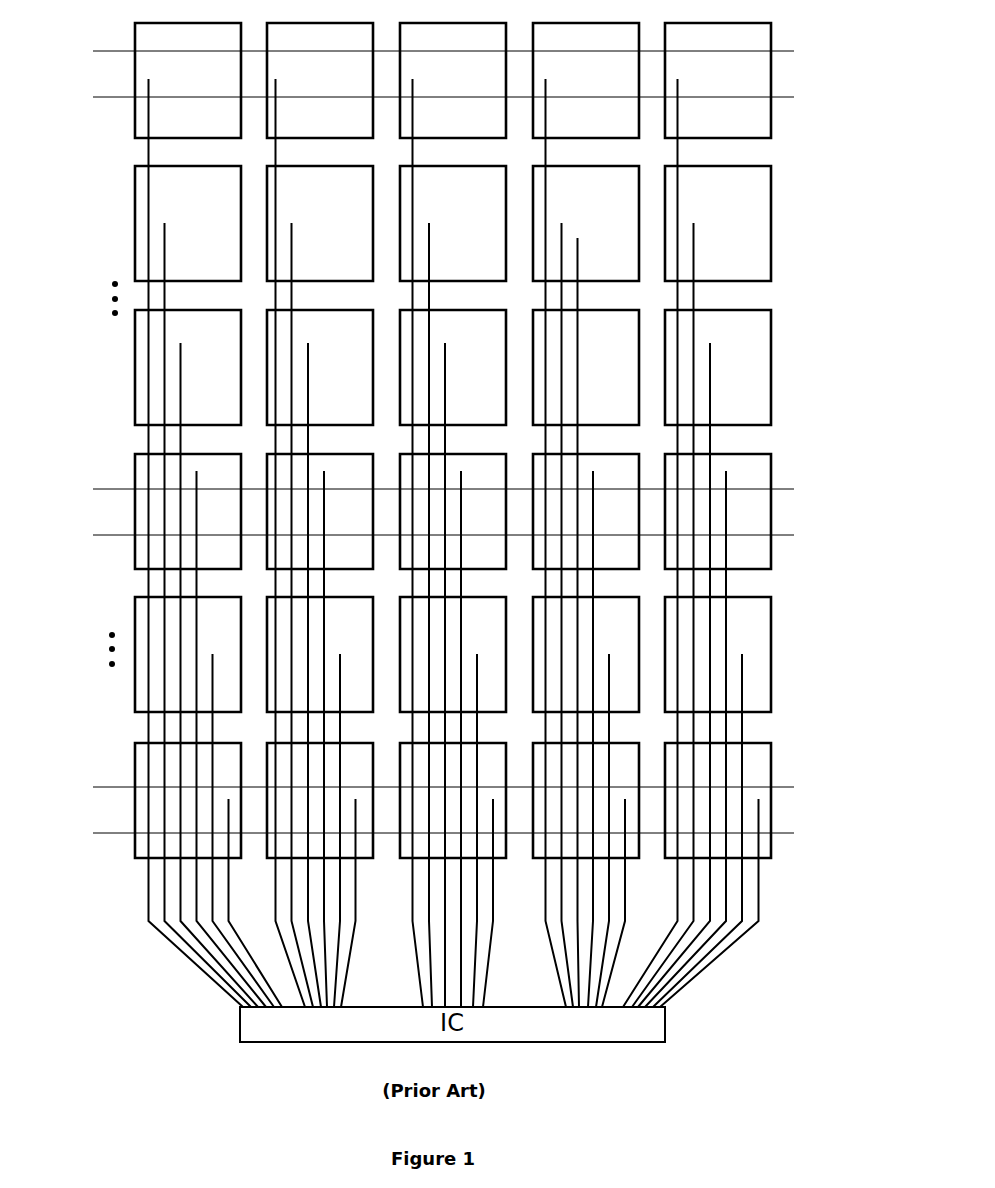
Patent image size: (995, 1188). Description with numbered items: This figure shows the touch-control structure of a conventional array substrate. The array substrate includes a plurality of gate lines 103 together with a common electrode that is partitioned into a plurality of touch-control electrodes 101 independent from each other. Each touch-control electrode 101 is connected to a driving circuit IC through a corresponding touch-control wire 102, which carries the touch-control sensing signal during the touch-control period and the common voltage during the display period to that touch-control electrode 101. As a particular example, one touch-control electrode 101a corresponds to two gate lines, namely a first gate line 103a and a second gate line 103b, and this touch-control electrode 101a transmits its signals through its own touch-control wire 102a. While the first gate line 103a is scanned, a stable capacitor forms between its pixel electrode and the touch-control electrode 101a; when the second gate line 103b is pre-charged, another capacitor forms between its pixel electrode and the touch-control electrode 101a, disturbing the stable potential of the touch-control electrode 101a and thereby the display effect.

The touch-control electrode 101 is at (765, 777).
The touch-control electrode 101a is at (147, 454).
The touch-control wire 102 is at (759, 884).
The touch-control wire 102a is at (197, 650).
The gate line 103 is at (133, 96).
The first gate line 103a is at (126, 489).
The second gate line 103b is at (126, 535).